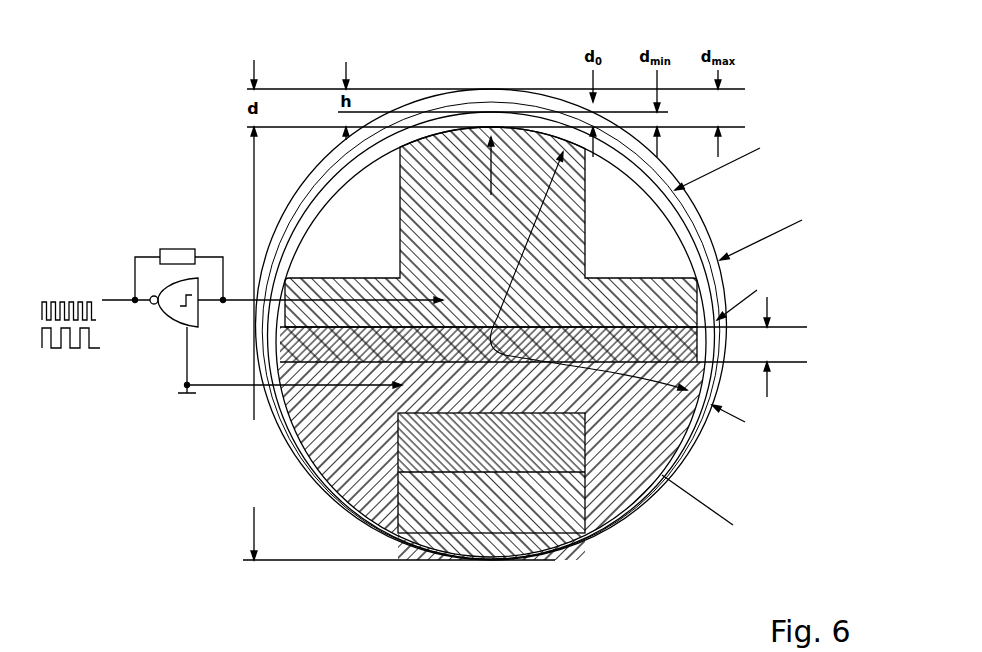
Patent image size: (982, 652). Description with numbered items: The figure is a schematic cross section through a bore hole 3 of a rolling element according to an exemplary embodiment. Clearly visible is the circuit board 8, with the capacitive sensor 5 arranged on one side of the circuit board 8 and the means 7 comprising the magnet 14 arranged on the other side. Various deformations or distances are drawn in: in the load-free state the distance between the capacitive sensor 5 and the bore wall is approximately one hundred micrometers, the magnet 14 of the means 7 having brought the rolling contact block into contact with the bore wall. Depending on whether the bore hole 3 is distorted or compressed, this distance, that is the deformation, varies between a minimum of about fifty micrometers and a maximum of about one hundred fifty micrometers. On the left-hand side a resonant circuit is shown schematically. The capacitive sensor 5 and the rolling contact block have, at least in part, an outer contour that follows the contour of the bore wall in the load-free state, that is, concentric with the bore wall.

The bore hole 3 is at (292, 203).
The capacitive sensor 5 is at (587, 218).
The means comprising the magnet 7 is at (667, 427).
The circuit board 8 is at (680, 341).
The magnet 14 is at (574, 498).